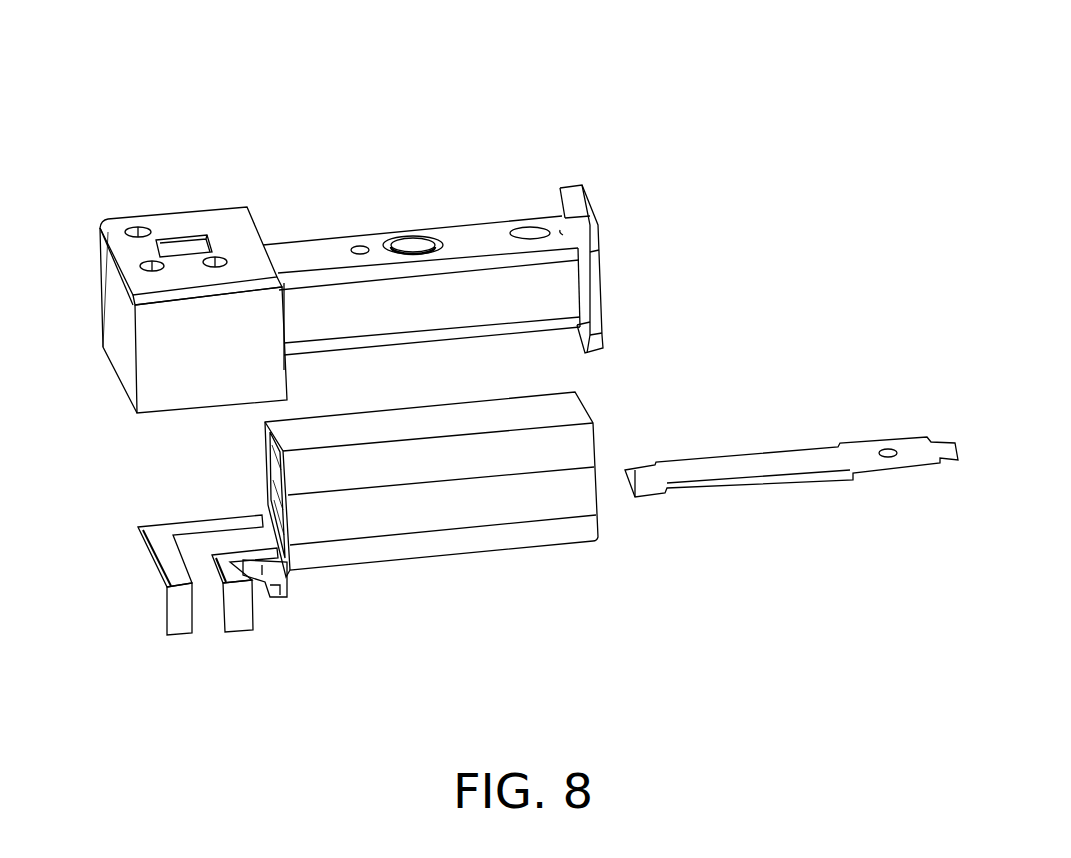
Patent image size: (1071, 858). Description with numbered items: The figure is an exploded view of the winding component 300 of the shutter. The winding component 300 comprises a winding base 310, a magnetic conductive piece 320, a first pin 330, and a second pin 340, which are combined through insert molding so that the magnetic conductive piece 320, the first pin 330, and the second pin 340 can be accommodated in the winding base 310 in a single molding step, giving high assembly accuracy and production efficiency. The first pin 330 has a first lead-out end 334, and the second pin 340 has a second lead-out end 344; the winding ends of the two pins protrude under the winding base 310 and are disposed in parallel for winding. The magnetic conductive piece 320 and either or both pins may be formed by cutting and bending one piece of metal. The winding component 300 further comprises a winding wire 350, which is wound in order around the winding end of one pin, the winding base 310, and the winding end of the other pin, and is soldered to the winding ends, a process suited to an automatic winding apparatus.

The winding component 300 is at (260, 60).
The winding base 310 is at (471, 235).
The magnetic conductive piece 320 is at (698, 472).
The first pin 330 is at (232, 563).
The first lead-out end 334 is at (248, 622).
The second pin 340 is at (165, 547).
The second lead-out end 344 is at (188, 622).
The winding wire 350 is at (520, 508).